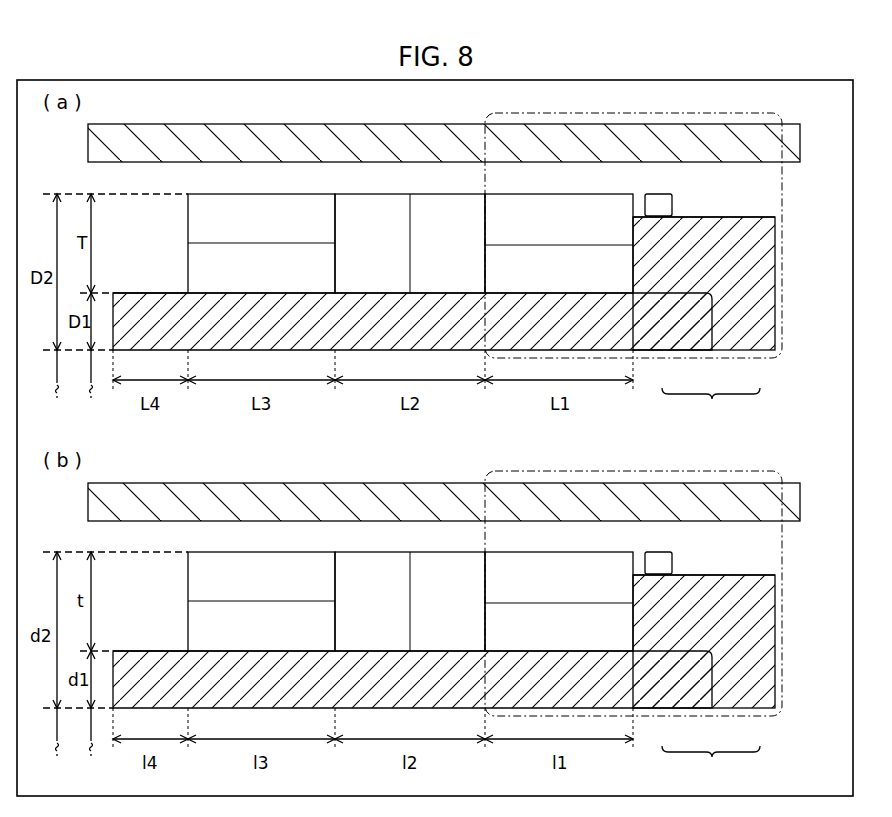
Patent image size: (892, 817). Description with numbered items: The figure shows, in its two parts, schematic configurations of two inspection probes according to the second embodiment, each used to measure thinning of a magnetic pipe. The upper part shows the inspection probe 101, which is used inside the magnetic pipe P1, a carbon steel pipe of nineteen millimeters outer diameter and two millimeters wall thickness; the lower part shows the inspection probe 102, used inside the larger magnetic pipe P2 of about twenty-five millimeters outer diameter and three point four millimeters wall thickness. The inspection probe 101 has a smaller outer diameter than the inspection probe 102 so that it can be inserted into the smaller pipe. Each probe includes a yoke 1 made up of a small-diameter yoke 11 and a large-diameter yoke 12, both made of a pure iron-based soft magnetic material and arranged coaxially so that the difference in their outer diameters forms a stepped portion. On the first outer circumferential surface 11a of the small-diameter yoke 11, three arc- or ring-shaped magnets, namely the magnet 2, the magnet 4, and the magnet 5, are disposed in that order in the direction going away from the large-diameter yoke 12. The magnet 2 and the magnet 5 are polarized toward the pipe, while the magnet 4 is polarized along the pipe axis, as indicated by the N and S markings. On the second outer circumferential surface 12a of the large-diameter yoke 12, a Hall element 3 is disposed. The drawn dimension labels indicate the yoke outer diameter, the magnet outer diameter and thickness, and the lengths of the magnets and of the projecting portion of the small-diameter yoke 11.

The inspection probe 101 is at (83, 179).
The inspection probe 102 is at (83, 537).
The magnetic pipe P1 is at (800, 143).
The magnetic pipe P2 is at (800, 502).
The yoke 1 is at (711, 589).
The small-diameter yoke 11 is at (679, 342).
The first outer circumferential surface 11a is at (138, 292).
The large-diameter yoke 12 is at (741, 342).
The second outer circumferential surface 12a is at (745, 216).
The magnet 2 is at (564, 194).
The Hall element 3 is at (659, 194).
The magnet 4 is at (414, 194).
The magnet 5 is at (262, 194).